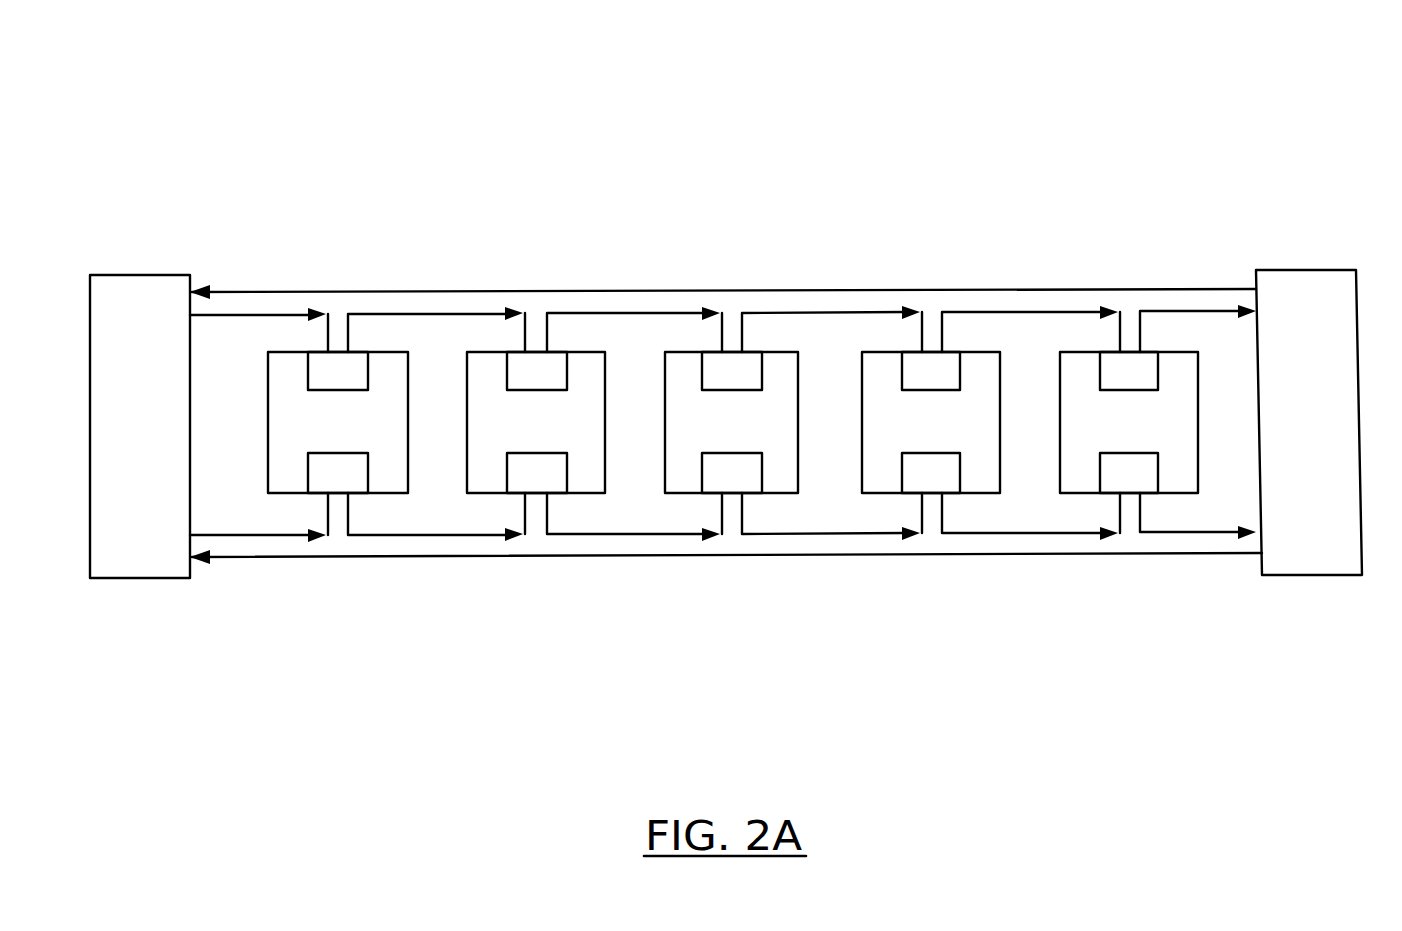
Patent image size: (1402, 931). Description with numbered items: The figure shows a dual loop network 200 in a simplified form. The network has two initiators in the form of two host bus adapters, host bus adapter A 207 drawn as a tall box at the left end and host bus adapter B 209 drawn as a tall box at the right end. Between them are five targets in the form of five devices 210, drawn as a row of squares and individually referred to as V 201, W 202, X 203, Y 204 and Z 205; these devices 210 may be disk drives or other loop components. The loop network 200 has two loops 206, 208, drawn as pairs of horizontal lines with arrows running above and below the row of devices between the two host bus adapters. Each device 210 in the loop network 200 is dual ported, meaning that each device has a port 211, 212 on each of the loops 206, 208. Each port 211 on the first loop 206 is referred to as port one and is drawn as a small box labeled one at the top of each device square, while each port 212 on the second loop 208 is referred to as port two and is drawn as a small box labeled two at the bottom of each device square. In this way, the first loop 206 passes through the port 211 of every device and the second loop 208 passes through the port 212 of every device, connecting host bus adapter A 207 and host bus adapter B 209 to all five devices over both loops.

The dual loop network 200 is at (588, 94).
The device V 201 is at (289, 352).
The device W 202 is at (585, 352).
The device X 203 is at (682, 352).
The device Y 204 is at (877, 352).
The device Z 205 is at (1180, 352).
The first loop 206 is at (642, 291).
The host bus adapter A 207 is at (159, 275).
The second loop 208 is at (691, 556).
The host bus adapter B 209 is at (1330, 270).
The devices 210 is at (460, 482).
The port 211 is at (510, 376).
The port 212 is at (358, 480).